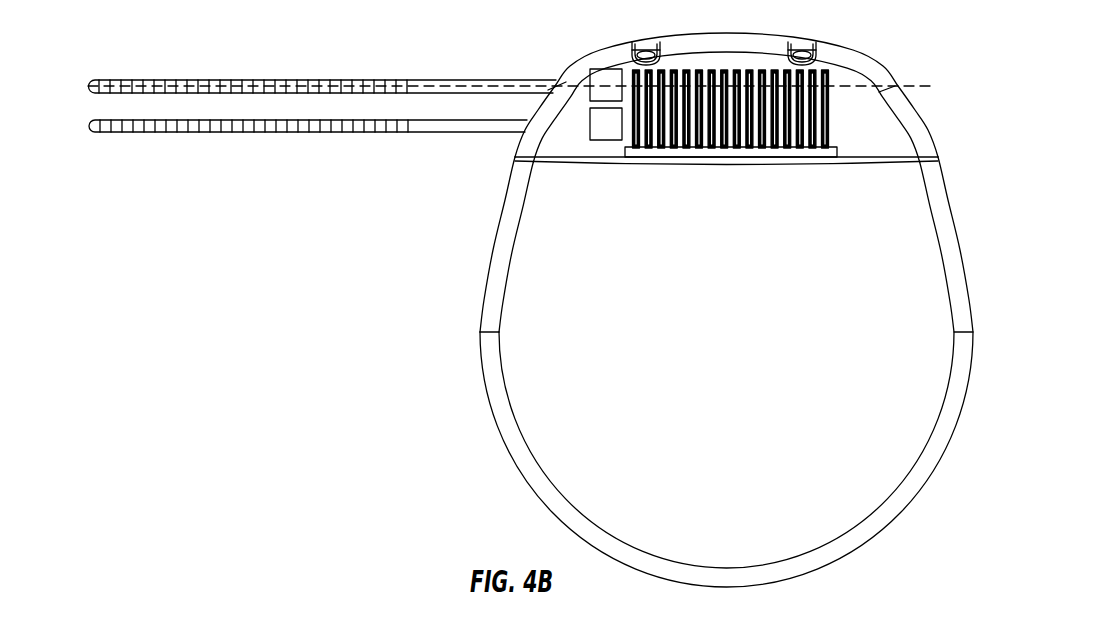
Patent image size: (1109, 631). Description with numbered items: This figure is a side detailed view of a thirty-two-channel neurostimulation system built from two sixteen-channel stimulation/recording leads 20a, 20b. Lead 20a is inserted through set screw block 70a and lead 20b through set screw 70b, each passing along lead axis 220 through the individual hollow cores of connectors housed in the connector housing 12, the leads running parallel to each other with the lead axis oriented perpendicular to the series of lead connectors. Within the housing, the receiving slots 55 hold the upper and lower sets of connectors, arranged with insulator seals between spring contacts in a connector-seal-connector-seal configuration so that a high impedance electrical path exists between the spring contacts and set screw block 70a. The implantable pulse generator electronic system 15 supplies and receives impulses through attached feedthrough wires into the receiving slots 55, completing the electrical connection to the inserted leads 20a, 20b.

The connector housing 12 is at (727, 38).
The implantable pulse generator electronic system 15 is at (747, 361).
The 16-channel stimulation/recording lead 20a is at (423, 79).
The 16-channel stimulation/recording lead 20b is at (423, 130).
The receiving slots 55 is at (835, 172).
The set screw block 70a is at (597, 71).
The set screw 70b is at (603, 137).
The lead axis 220 is at (937, 62).